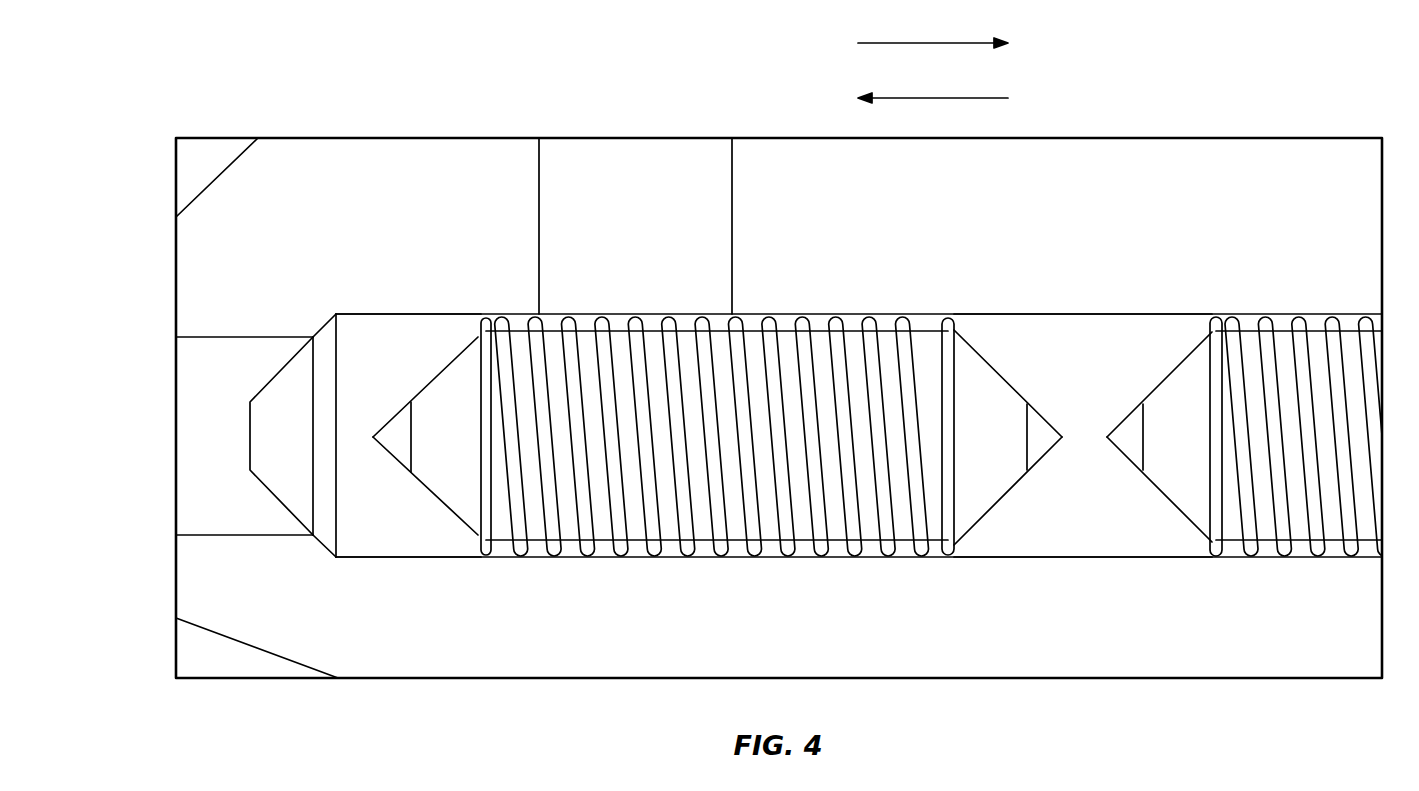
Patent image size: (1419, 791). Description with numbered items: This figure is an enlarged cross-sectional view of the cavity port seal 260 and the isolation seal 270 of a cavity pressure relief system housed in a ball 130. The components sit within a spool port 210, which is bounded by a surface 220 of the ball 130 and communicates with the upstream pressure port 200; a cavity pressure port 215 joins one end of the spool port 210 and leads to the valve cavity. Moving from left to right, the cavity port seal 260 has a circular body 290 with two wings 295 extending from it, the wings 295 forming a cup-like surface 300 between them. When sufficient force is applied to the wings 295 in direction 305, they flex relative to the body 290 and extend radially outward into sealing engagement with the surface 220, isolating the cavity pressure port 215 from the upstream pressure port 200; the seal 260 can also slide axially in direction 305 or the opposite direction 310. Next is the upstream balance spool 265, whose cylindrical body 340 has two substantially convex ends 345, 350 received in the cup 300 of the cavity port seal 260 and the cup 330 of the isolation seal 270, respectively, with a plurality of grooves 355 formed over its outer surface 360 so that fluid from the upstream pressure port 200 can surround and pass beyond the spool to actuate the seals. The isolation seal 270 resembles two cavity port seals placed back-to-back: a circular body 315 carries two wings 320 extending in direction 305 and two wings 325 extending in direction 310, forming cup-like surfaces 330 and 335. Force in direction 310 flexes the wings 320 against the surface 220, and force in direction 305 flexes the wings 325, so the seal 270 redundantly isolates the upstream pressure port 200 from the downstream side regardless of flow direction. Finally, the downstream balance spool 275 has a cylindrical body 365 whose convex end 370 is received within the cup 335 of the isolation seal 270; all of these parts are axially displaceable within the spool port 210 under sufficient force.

The ball 130 is at (357, 227).
The upstream pressure port 200 is at (594, 221).
The spool port 210 is at (787, 318).
The cavity pressure port 215 is at (187, 447).
The surface 220 is at (384, 314).
The cavity port seal 260 is at (358, 568).
The upstream balance spool 265 is at (670, 570).
The isolation seal 270 is at (1103, 572).
The downstream balance spool 275 is at (1308, 572).
The circular body 290 is at (352, 428).
The wings 295 is at (448, 335).
The cup-like surface 300 is at (392, 446).
The direction 305 is at (900, 98).
The opposite direction 310 is at (900, 43).
The circular body 315 is at (1057, 501).
The wings 320 is at (988, 333).
The wings 325 is at (1187, 345).
The cup-like surface 330 is at (1046, 418).
The cup-like surface 335 is at (1125, 418).
The cylindrical body 340 is at (852, 553).
The end 345 is at (428, 407).
The end 350 is at (990, 418).
The grooves 355 is at (738, 552).
The outer surface 360 is at (920, 553).
The cylindrical body 365 is at (1297, 355).
The end 370 is at (1155, 470).